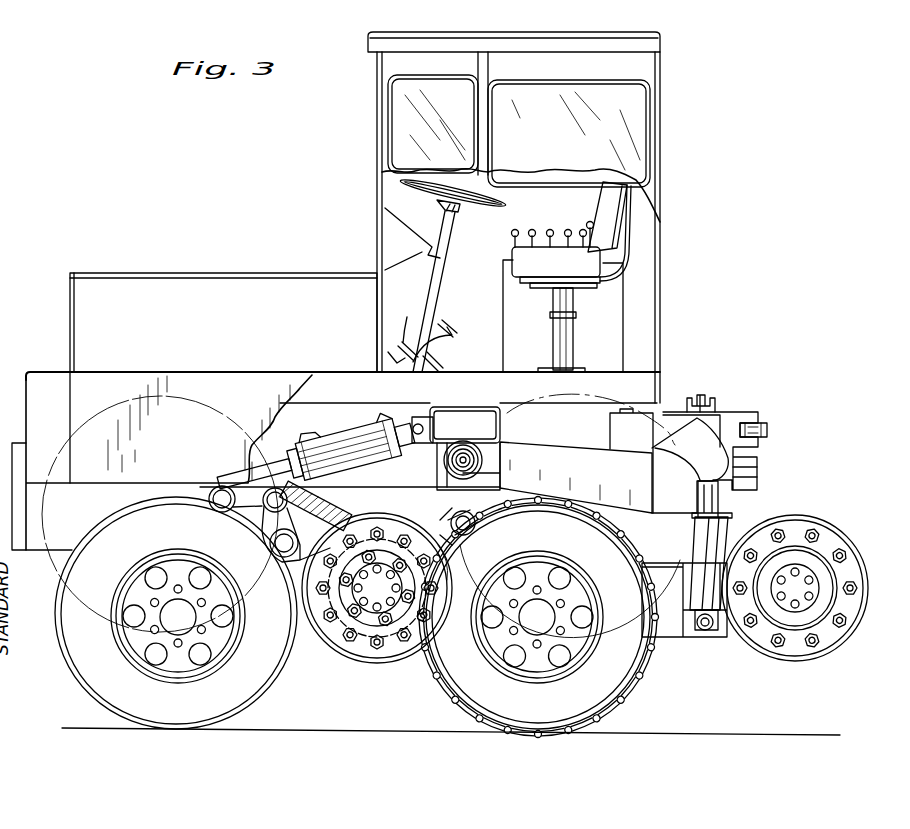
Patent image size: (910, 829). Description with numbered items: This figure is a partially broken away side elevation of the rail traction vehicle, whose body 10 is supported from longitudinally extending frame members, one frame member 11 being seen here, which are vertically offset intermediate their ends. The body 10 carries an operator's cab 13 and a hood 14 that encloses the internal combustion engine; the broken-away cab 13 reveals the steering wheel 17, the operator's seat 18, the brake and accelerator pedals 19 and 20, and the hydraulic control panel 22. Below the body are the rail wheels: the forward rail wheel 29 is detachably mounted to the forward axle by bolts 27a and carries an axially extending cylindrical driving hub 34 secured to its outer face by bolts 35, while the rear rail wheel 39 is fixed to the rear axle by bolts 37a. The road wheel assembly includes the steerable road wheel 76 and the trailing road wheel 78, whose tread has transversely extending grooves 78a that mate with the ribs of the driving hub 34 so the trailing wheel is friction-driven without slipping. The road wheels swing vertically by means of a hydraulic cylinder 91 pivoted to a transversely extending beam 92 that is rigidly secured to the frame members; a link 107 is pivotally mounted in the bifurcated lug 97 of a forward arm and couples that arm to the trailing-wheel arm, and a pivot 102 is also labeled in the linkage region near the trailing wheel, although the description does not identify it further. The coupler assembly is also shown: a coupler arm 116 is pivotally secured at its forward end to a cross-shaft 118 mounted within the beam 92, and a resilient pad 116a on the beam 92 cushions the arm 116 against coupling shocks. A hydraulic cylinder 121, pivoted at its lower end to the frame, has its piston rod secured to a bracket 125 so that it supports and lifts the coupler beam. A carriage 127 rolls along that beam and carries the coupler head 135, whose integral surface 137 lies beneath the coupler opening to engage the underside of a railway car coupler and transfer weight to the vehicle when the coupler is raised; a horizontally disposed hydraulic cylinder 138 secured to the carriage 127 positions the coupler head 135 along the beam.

The body 10 is at (696, 222).
The frame member 11 is at (42, 548).
The operator's cab 13 is at (376, 163).
The hood 14 is at (225, 276).
The steering wheel 17 is at (505, 178).
The operator's seat 18 is at (610, 194).
The brake pedal 19 is at (452, 330).
The accelerator pedal 20 is at (406, 326).
The hydraulic control panel 22 is at (510, 270).
The bolts 27a is at (442, 549).
The rail wheel 29 is at (375, 601).
The driving hub 34 is at (372, 618).
The bolts 35 is at (385, 648).
The bolts 37a is at (829, 612).
The rail wheel 39 is at (802, 584).
The steerable road wheel 76 is at (75, 607).
The trailing road wheel 78 is at (622, 684).
The grooves 78a is at (616, 710).
The hydraulic cylinder 91 is at (355, 438).
The beam 92 is at (487, 410).
The bifurcated lug 97 is at (272, 462).
The pivot pin 102 is at (455, 514).
The link 107 is at (330, 520).
The coupler arm 116 is at (556, 455).
The resilient pad 116a is at (440, 478).
The cross-shaft 118 is at (464, 444).
The hydraulic cylinder 121 is at (728, 534).
The bracket 125 is at (750, 458).
The carriage 127 is at (608, 426).
The coupler head 135 is at (738, 420).
The surface 137 is at (760, 478).
The hydraulic cylinder 138 is at (700, 396).